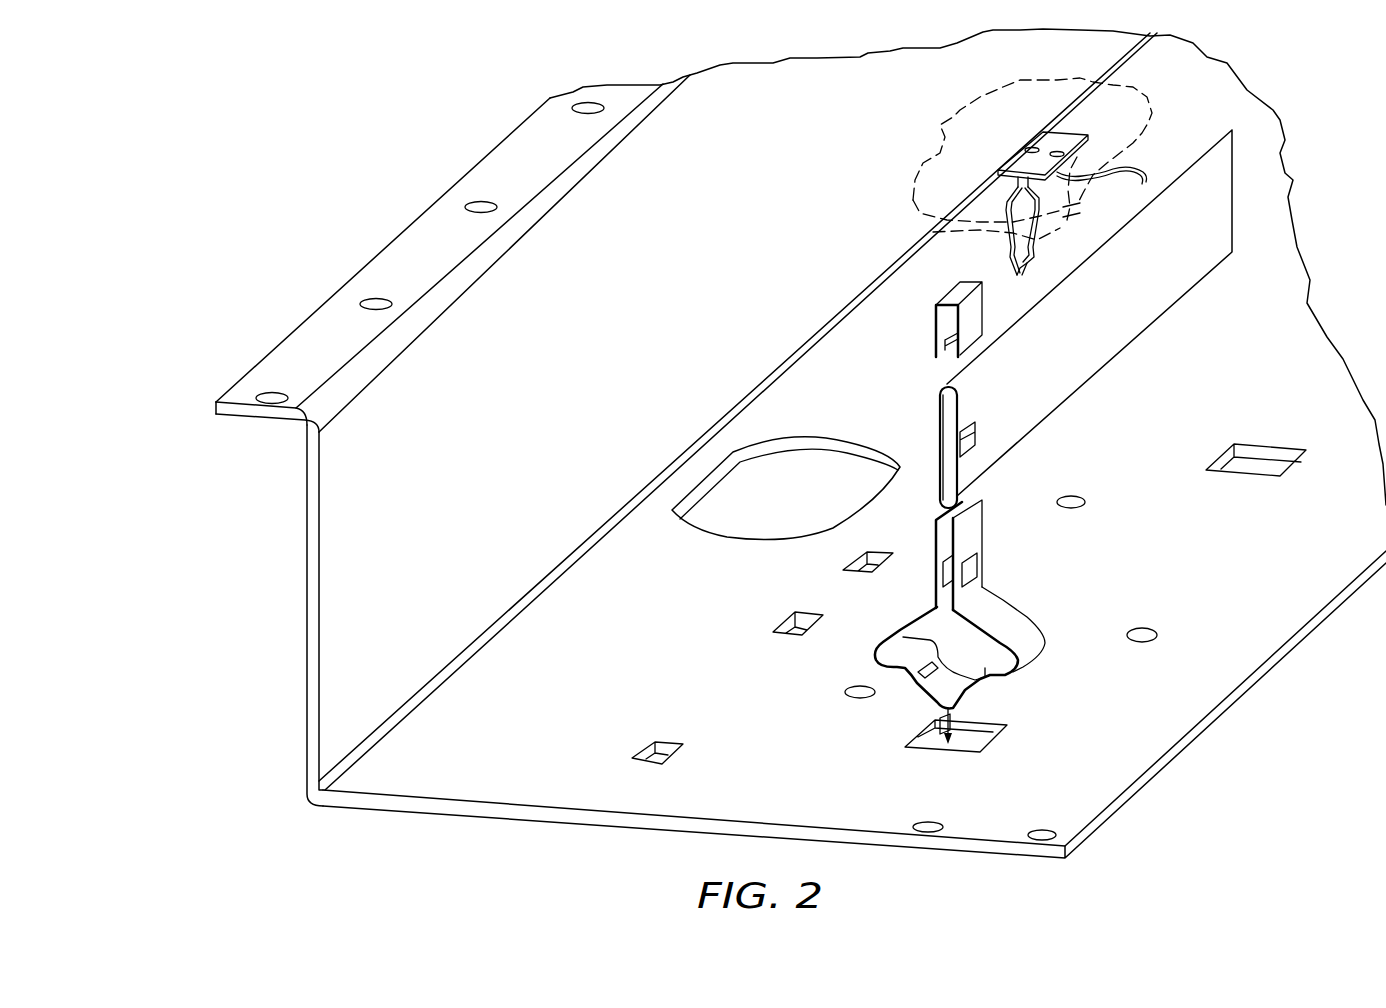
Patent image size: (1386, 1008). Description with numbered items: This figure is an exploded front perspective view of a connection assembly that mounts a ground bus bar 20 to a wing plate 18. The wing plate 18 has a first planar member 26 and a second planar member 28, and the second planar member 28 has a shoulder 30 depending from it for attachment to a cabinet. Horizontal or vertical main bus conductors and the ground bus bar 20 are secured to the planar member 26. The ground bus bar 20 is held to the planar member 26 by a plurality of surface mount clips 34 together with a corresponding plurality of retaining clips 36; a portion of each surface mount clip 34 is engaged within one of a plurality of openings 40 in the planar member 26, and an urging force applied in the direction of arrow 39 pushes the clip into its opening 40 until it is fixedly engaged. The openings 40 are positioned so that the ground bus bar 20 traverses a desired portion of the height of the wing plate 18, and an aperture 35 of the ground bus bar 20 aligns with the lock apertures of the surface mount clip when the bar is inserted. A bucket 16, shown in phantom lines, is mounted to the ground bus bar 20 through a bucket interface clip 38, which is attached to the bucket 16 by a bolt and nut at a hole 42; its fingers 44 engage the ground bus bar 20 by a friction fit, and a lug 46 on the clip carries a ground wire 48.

The bucket 16 is at (1039, 192).
The wing plate 18 is at (801, 470).
The ground bus bar 20 is at (1086, 319).
The first planar member 26 is at (852, 445).
The second planar member 28 is at (432, 502).
The shoulder 30 is at (375, 275).
The surface mount clip 34 is at (990, 622).
The aperture 35 is at (967, 437).
The retaining clip 36 is at (935, 302).
The bucket interface clip 38 is at (972, 242).
The arrow 39 is at (955, 715).
The opening 40 is at (980, 740).
The hole 42 is at (1043, 132).
The fingers 44 is at (1009, 245).
The lug 46 is at (1067, 138).
The ground wire 48 is at (1147, 161).